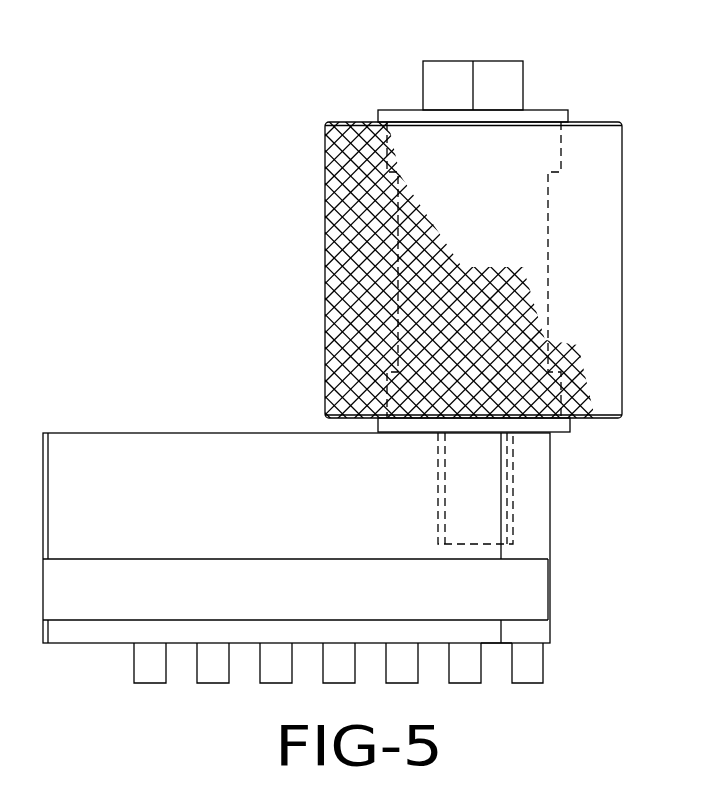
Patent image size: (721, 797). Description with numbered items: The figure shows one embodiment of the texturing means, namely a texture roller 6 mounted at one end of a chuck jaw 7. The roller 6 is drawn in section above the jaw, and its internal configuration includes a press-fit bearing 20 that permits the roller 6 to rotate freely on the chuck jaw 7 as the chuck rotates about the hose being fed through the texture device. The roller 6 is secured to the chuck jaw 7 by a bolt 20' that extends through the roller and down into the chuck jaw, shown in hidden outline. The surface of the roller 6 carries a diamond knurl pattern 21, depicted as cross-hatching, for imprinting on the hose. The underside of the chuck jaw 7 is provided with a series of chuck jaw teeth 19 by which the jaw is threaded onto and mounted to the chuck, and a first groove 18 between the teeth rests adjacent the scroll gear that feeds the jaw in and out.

The texture roller 6 is at (622, 262).
The chuck jaw 7 is at (150, 418).
The first groove 18 is at (499, 662).
The chuck jaw teeth 19 is at (543, 660).
The press-fit bearing 20 is at (509, 247).
The bolt 20' is at (528, 68).
The diamond knurl pattern 21 is at (360, 240).